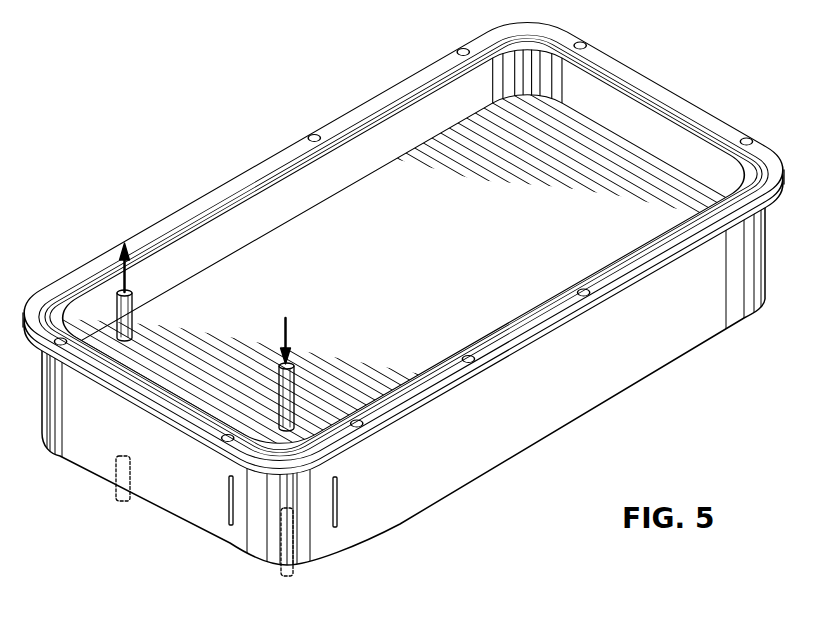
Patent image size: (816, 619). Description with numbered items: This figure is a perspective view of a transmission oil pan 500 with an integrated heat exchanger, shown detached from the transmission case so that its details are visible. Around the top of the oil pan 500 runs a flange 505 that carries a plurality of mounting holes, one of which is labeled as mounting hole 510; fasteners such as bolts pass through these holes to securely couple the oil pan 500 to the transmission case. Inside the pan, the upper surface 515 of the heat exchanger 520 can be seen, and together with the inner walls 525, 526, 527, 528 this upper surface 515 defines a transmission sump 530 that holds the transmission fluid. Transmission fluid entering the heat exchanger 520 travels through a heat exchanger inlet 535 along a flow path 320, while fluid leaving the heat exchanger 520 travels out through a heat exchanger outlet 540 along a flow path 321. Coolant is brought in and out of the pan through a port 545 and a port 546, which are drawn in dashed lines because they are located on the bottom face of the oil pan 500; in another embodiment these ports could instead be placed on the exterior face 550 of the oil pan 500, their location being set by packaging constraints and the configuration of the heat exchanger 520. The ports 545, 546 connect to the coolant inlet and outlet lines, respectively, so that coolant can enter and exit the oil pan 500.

The oil pan 500 is at (682, 343).
The flange 505 is at (634, 75).
The mounting hole 510 is at (746, 138).
The upper surface 515 is at (445, 293).
The heat exchanger 520 is at (418, 364).
The inner wall 525 is at (290, 223).
The inner wall 526 is at (690, 153).
The inner wall 527 is at (543, 315).
The inner wall 528 is at (135, 380).
The transmission sump 530 is at (360, 217).
The heat exchanger inlet 535 is at (291, 388).
The heat exchanger outlet 540 is at (133, 324).
The flow path 320 is at (286, 325).
The flow path 321 is at (130, 276).
The port 545 is at (128, 498).
The port 546 is at (286, 578).
The exterior face 550 is at (145, 435).